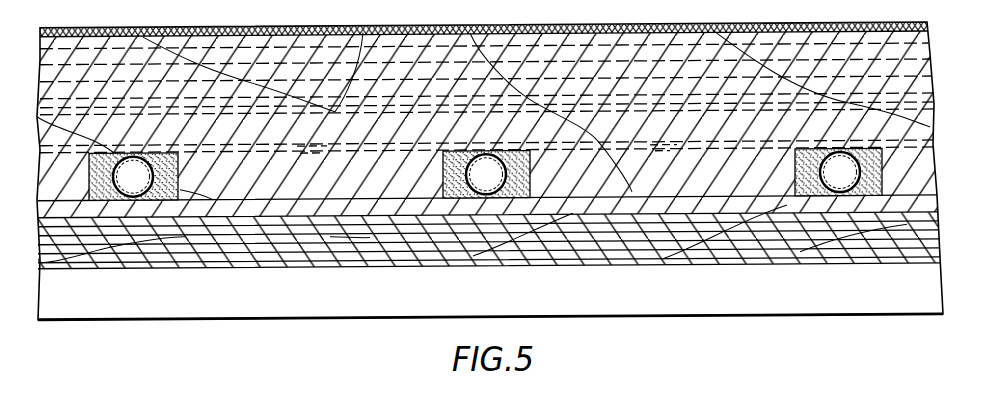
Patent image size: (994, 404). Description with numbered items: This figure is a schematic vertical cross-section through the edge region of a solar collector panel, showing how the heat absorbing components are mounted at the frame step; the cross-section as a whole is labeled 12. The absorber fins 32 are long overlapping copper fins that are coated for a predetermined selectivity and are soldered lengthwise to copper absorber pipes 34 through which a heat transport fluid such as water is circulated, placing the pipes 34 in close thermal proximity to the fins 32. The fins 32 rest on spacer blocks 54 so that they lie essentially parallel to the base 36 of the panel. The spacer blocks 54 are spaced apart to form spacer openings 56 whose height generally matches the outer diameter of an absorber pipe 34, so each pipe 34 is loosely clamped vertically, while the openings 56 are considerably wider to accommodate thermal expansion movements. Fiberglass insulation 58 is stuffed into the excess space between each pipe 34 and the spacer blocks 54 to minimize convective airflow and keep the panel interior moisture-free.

The composite panel 12 is at (459, 302).
The absorber fin 32 is at (733, 154).
The absorber pipe 34 is at (820, 181).
The base 36 is at (545, 250).
The spacer block 54 is at (658, 181).
The spacer opening 56 is at (883, 184).
The fiberglass insulation 58 is at (867, 201).